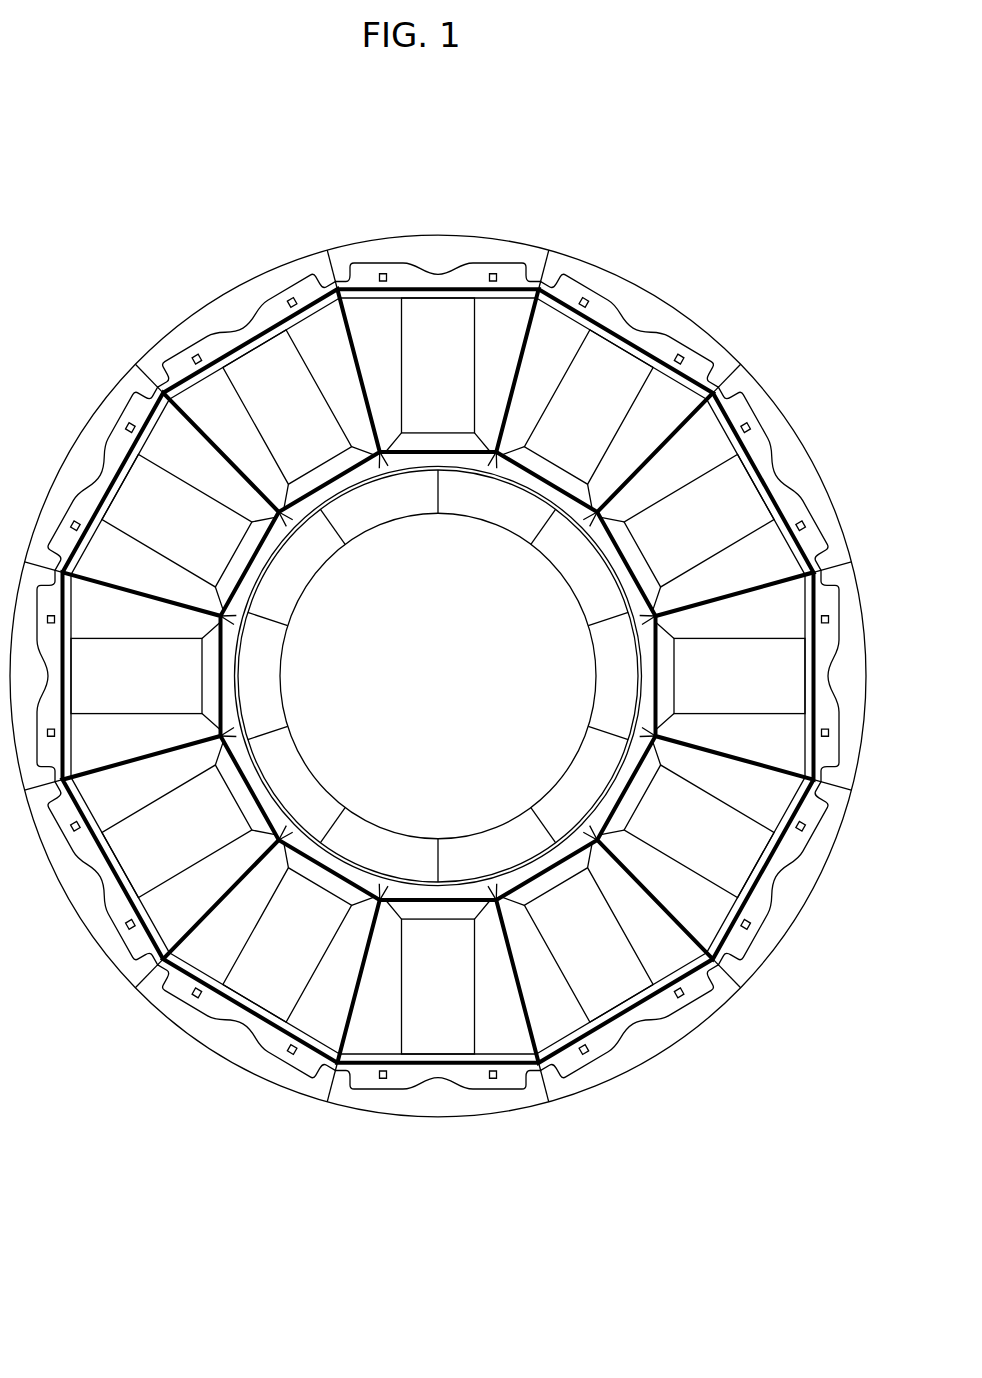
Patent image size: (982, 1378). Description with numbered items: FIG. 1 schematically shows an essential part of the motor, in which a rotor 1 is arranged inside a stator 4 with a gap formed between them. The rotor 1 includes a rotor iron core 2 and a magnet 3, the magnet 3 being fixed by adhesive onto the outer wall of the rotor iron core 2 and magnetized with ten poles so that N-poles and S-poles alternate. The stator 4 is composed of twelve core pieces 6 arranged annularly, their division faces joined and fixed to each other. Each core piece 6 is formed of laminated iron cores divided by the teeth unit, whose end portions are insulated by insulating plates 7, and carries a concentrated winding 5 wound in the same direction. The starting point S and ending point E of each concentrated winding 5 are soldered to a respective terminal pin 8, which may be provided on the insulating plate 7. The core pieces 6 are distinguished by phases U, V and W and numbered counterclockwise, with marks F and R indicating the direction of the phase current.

The rotor 1 is at (512, 178).
The iron core of rotor 2 is at (413, 530).
The magnet 3 is at (482, 473).
The stator 4 is at (548, 1185).
The concentrated winding 5 is at (430, 1000).
The core piece 6 is at (450, 1120).
The insulating plate 7 is at (468, 1092).
The terminal pin 8 is at (494, 1078).